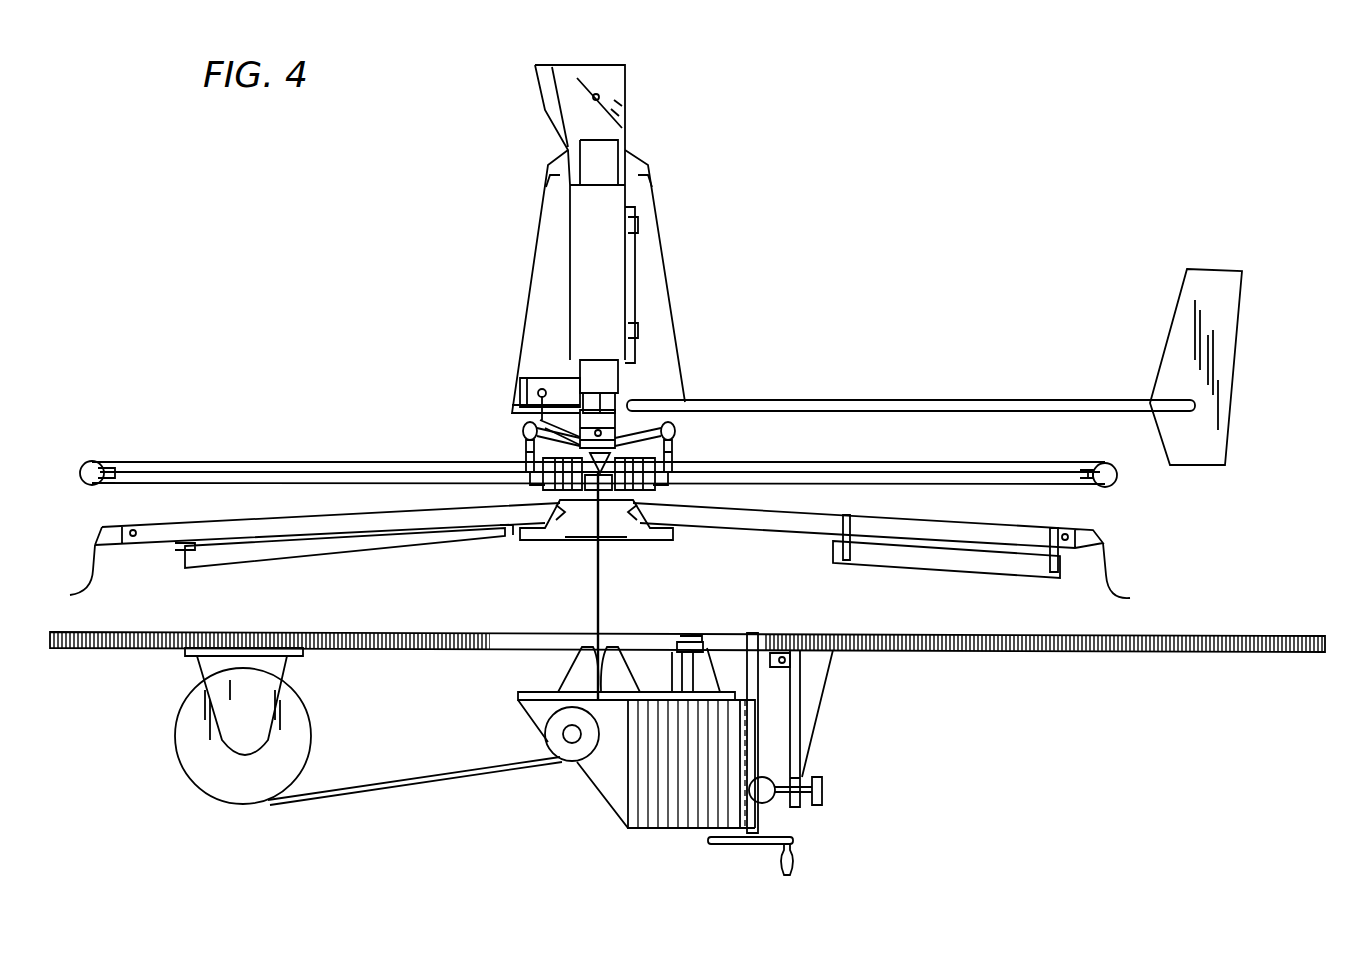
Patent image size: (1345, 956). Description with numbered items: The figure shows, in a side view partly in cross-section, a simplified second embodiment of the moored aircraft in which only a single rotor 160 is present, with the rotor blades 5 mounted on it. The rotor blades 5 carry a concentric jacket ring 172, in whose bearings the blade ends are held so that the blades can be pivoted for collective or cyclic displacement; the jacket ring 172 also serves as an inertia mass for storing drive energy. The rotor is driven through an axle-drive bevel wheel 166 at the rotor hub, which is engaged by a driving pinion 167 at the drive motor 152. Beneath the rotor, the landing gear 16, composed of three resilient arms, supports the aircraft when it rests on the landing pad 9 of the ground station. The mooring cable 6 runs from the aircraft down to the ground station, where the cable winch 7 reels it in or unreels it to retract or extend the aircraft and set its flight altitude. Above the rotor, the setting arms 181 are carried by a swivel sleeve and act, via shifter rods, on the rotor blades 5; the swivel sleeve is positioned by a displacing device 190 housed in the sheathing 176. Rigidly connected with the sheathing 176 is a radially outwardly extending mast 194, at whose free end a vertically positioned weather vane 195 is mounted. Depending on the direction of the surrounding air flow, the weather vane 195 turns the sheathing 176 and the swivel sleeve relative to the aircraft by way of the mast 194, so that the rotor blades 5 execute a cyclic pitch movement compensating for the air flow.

The rotor blades 5 is at (256, 466).
The mooring cable 6 is at (596, 597).
The cable winch 7 is at (225, 780).
The landing pad 9 is at (1040, 650).
The landing gear 16 is at (456, 520).
The drive motor 152 is at (683, 822).
The rotor 160 is at (350, 455).
The axle-drive bevel wheel 166 is at (677, 494).
The driving pinion 167 is at (690, 640).
The jacket ring 172 is at (87, 462).
The sheathing 176 is at (662, 262).
The setting arms 181 is at (676, 437).
The displacing device 190 is at (510, 365).
The mast 194 is at (932, 400).
The weather vane 195 is at (1197, 275).